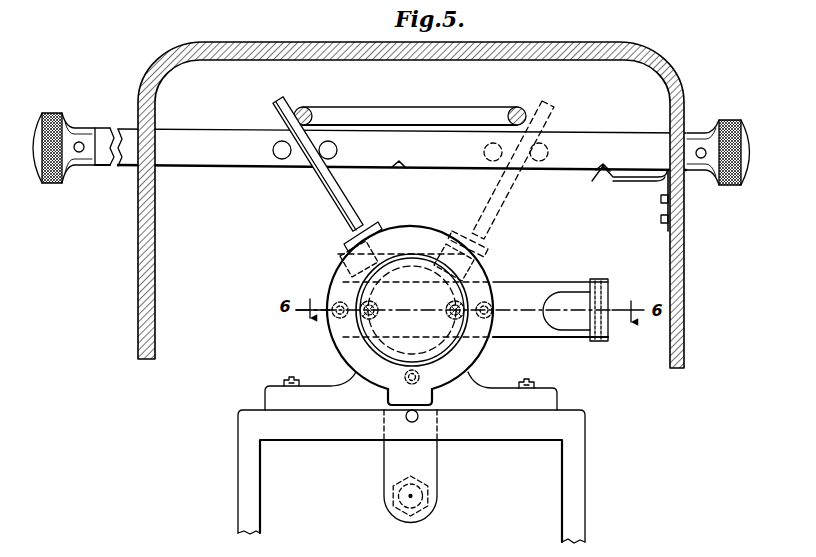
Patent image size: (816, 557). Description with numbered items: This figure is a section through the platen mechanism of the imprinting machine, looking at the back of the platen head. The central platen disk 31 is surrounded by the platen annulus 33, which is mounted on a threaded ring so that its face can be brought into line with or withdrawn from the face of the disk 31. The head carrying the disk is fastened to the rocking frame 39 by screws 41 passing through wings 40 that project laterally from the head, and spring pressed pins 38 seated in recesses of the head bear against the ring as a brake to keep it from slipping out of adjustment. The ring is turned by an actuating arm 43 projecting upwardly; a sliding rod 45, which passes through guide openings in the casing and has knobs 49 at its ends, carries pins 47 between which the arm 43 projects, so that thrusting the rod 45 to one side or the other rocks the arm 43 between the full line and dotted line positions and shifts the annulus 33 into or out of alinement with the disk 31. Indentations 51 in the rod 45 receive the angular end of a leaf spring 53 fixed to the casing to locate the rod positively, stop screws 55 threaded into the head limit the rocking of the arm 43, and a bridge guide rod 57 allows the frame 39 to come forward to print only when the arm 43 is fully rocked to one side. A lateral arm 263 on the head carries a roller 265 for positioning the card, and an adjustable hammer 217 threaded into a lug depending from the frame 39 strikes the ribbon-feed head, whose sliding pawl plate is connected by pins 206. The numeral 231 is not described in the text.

The platen disk 31 is at (390, 321).
The platen annulus 33 is at (469, 350).
The spring pressed pins 38 is at (328, 298).
The rocking frame 39 is at (578, 475).
The wings 40 is at (272, 396).
The screws 41 is at (306, 380).
The actuating arm 43 is at (331, 190).
The sliding rod 45 is at (183, 135).
The pins 47 is at (281, 160).
The knobs 49 is at (63, 114).
The indentations 51 is at (401, 165).
The leaf spring 53 is at (635, 181).
The stop screws 55 is at (340, 263).
The bridge guide rod 57 is at (463, 111).
The pins 206 is at (328, 31).
The hammer 217 is at (437, 497).
The element 231 is at (351, 12).
The lateral arm 263 is at (527, 290).
The roller 265 is at (600, 284).